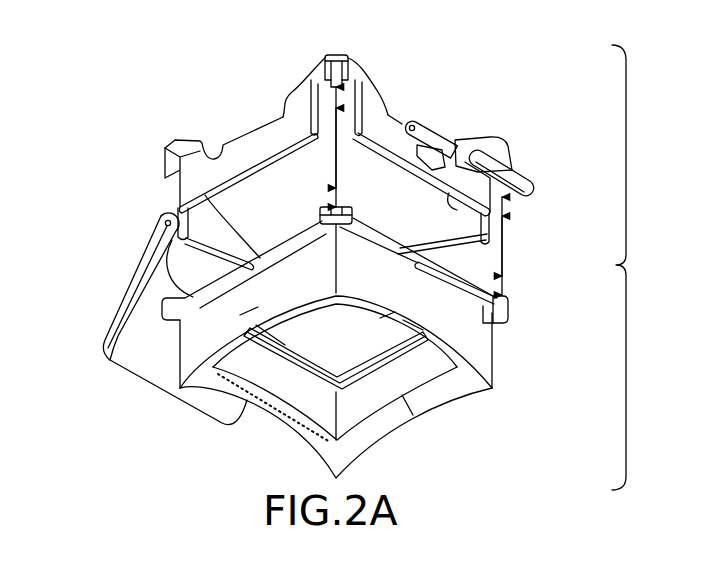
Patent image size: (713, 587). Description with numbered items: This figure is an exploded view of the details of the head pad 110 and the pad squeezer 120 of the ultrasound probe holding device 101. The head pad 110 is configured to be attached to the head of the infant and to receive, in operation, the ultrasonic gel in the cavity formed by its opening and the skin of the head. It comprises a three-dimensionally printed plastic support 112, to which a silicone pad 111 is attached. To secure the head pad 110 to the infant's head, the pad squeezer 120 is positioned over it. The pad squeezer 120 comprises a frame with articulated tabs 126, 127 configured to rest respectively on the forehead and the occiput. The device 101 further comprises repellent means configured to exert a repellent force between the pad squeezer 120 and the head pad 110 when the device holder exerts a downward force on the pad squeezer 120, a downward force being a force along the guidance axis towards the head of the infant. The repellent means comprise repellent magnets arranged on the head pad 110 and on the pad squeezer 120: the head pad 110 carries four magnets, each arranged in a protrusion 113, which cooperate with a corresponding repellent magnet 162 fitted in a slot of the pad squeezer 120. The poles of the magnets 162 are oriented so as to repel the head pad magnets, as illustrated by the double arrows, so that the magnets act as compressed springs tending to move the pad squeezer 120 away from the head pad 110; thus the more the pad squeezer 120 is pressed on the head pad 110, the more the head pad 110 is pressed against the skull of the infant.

The ultrasound probe holding device 101 is at (647, 267).
The head pad 110 is at (505, 378).
The silicone pad 111 is at (470, 333).
The 3D printed plastic support 112 is at (463, 277).
The protrusion 113 is at (318, 208).
The pad squeezer 120 is at (470, 128).
The articulated tab 126 is at (112, 316).
The articulated tab 127 is at (532, 166).
The repellent magnet 162 is at (340, 73).